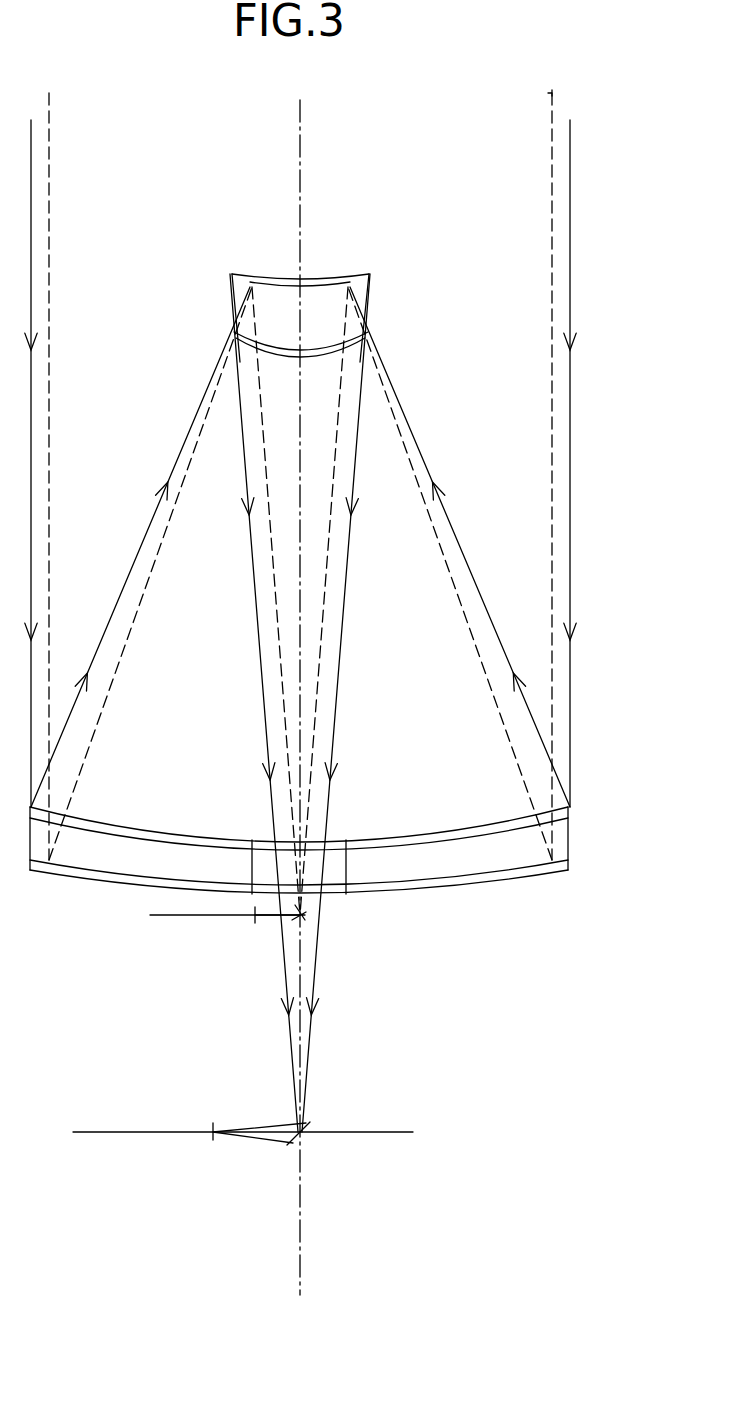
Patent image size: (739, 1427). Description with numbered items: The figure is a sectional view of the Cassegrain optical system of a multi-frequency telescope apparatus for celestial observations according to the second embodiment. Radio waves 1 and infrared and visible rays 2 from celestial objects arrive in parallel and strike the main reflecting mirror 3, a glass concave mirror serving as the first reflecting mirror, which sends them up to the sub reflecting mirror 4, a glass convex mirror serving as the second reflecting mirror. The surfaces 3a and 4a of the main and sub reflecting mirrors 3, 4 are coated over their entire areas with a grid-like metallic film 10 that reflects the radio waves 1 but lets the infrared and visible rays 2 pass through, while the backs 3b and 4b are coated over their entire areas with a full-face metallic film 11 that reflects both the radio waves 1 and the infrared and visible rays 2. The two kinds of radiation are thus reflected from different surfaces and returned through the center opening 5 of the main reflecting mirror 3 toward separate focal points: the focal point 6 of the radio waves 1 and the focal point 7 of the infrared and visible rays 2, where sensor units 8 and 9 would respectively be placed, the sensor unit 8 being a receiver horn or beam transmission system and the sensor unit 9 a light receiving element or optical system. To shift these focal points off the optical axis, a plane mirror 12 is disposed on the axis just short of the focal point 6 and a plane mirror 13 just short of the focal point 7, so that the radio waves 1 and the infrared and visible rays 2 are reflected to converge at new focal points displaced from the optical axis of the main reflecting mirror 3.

The radio waves 1 is at (570, 162).
The infrared and visible rays 2 is at (552, 97).
The main reflecting mirror 3 is at (332, 598).
The surface of main reflecting mirror 3a is at (468, 837).
The back of main reflecting mirror 3b is at (470, 875).
The sub reflecting mirror 4 is at (255, 308).
The surface of sub reflecting mirror 4a is at (247, 359).
The back of sub reflecting mirror 4b is at (255, 275).
The center opening 5 is at (340, 838).
The focal point of the radio waves 6 is at (243, 1162).
The sensor unit 8 is at (213, 1138).
The focal point of the infrared and visible rays 7 is at (225, 947).
The sensor unit 9 is at (255, 922).
The grid-like metallic film 10 is at (412, 837).
The full-face metallic film 11 is at (412, 893).
The plane mirror 12 is at (300, 1130).
The plane mirror 13 is at (300, 915).